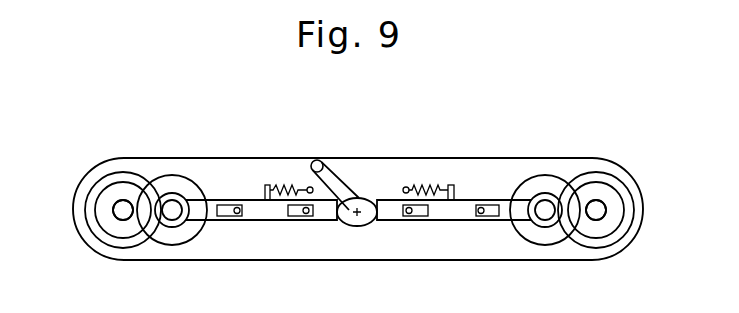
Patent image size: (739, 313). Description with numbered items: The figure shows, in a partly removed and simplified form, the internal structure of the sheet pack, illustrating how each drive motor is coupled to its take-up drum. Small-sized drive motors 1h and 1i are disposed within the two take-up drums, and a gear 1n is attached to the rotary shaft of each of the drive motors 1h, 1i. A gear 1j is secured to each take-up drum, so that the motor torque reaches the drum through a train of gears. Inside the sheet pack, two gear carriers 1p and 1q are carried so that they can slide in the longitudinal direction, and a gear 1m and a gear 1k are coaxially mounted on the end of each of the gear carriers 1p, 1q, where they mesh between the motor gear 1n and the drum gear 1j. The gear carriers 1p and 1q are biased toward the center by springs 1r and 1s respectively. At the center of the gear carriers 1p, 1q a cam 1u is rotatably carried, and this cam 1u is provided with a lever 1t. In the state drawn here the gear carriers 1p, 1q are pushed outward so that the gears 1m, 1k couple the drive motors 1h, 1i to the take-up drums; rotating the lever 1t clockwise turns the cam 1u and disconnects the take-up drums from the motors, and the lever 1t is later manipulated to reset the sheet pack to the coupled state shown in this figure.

The gear 1j is at (122, 172).
The gear 1m is at (172, 176).
The gear 1k is at (173, 199).
The gear 1n is at (118, 208).
The drive motor 1i is at (76, 221).
The drive motor 1h is at (638, 220).
The gear carrier 1p is at (263, 222).
The gear carrier 1q is at (455, 222).
The spring 1r is at (293, 187).
The spring 1s is at (428, 187).
The lever 1t is at (332, 180).
The cam 1u is at (367, 203).